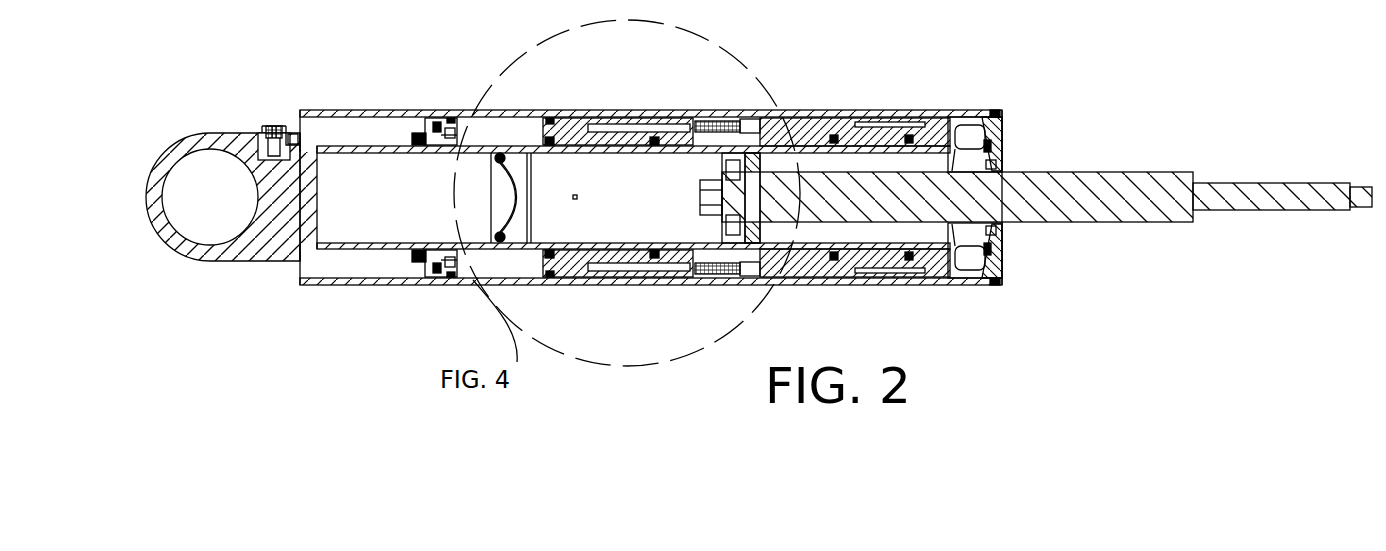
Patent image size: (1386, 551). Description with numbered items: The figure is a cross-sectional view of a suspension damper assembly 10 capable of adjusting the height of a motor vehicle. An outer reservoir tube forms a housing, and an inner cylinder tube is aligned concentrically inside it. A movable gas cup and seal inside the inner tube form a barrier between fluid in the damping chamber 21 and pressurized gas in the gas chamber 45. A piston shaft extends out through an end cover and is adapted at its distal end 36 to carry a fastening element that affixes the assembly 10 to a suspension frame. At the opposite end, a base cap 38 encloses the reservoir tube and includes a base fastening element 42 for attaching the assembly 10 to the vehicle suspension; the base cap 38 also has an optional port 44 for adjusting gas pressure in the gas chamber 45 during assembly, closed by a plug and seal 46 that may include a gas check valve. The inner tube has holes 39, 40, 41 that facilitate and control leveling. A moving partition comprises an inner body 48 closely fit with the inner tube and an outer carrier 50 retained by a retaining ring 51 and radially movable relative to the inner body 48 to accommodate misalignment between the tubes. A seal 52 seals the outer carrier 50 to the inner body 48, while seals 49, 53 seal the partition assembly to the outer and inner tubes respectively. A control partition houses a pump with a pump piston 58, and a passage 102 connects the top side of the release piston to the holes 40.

The suspension damper assembly 10 is at (1171, 101).
The damping chamber 21 is at (570, 185).
The distal end 36 is at (1343, 184).
The base cap 38 is at (250, 279).
The hole 39 is at (577, 246).
The hole 40 is at (935, 238).
The hole 41 is at (750, 253).
The base fastening element 42 is at (166, 240).
The port 44 is at (283, 126).
The gas chamber 45 is at (334, 221).
The plug and seal 46 is at (262, 127).
The inner body 48 is at (432, 126).
The seal 49 is at (448, 282).
The outer carrier 50 is at (474, 112).
The retaining ring 51 is at (454, 256).
The seal 52 is at (436, 146).
The seal 53 is at (414, 252).
The pump piston 58 is at (600, 130).
The passage 102 is at (898, 130).